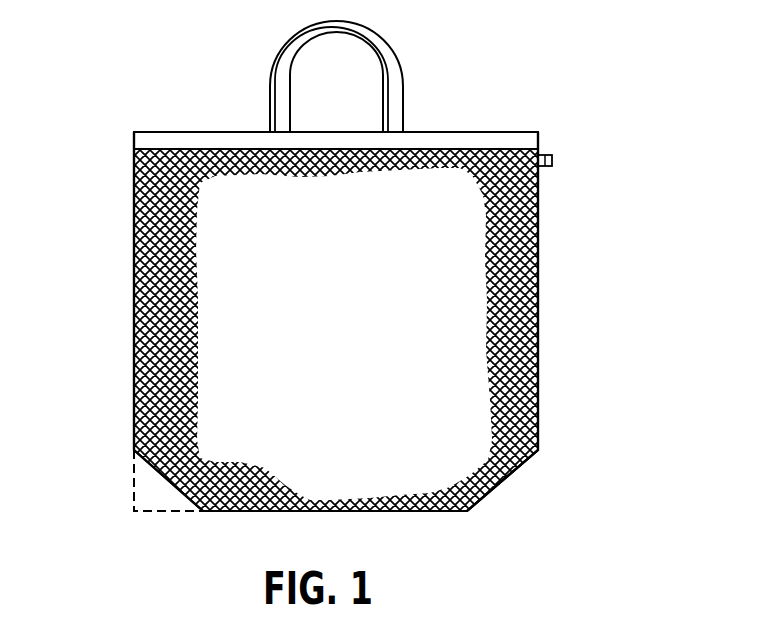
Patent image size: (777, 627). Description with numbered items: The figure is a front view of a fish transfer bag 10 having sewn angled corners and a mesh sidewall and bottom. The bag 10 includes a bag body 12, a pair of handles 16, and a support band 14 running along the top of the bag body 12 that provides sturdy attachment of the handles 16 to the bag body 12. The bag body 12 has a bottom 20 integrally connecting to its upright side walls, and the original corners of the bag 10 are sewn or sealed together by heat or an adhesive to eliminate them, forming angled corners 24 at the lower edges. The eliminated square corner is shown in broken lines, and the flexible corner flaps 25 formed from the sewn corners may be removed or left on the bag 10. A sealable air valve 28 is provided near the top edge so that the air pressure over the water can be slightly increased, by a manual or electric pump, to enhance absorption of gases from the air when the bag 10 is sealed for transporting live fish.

The fish transfer bag 10 is at (632, 208).
The bag body 12 is at (134, 313).
The support band 14 is at (157, 143).
The handles 16 is at (392, 69).
The bottom 20 is at (517, 280).
The angled corners 24 is at (493, 487).
The flexible corner flaps 25 is at (170, 512).
The sealable air valve 28 is at (552, 160).